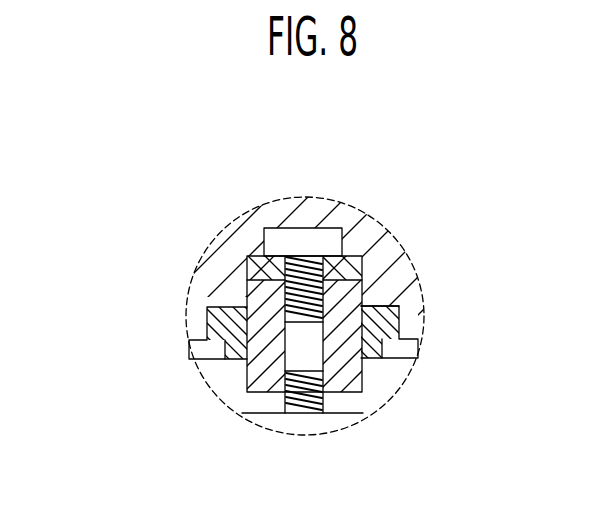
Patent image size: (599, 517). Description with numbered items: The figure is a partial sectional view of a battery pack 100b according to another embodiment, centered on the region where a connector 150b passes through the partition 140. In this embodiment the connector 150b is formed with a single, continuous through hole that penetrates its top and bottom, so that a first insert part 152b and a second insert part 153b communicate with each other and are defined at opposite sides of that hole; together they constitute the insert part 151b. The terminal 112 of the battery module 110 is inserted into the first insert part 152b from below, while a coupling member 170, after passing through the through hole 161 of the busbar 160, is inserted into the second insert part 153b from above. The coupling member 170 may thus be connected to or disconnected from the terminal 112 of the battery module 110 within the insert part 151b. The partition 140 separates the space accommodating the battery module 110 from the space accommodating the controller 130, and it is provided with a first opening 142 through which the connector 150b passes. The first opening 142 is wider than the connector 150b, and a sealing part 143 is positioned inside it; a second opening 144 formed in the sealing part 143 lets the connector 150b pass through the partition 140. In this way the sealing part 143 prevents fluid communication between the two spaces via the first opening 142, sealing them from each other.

The battery pack 100b is at (60, 138).
The battery module 110 is at (342, 416).
The terminal 112 is at (311, 405).
The controller 130 is at (368, 238).
The partition 140 is at (424, 334).
The first opening 142 is at (376, 362).
The sealing part 143 is at (393, 297).
The second opening 144 is at (373, 325).
The connector 150b is at (370, 399).
The insert part 151b is at (256, 328).
The first insert part 152b is at (283, 384).
The second insert part 153b is at (282, 276).
The busbar 160 is at (353, 231).
The through hole 161 is at (275, 272).
The coupling member 170 is at (336, 214).